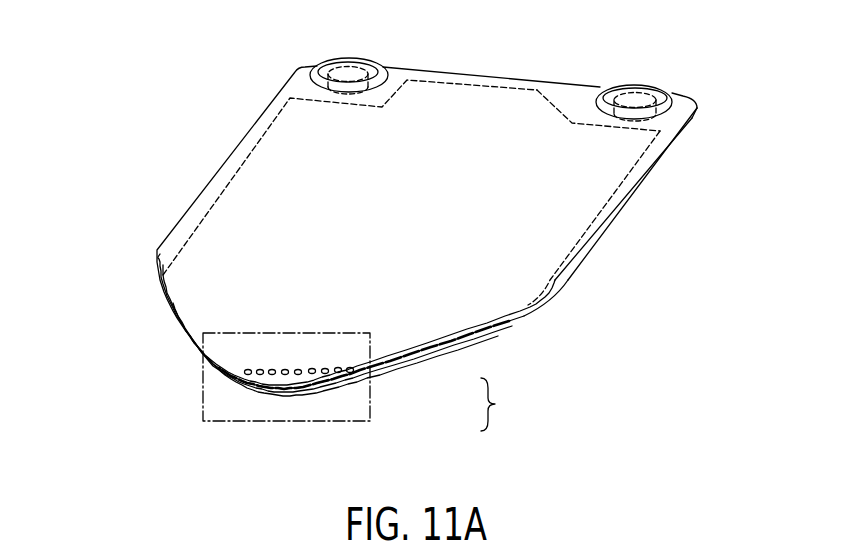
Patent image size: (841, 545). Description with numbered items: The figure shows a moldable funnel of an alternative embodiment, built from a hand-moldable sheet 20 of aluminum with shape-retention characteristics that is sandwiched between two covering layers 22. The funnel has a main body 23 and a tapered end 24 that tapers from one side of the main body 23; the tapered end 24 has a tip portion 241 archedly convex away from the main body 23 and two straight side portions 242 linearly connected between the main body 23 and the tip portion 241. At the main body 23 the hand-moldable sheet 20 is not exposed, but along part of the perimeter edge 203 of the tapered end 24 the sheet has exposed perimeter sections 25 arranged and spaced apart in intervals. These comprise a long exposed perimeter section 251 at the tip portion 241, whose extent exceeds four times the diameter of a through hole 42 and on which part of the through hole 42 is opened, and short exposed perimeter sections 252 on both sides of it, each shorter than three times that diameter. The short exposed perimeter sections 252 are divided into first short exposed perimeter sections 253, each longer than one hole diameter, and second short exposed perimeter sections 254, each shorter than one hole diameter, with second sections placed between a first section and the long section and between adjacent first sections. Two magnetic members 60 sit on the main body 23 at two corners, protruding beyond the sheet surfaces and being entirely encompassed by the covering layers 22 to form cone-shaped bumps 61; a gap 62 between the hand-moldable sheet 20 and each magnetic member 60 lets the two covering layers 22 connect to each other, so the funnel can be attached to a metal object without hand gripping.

The hand-moldable sheet 20 is at (541, 84).
The covering layers 22 is at (613, 219).
The main body 23 is at (593, 175).
The tapered end 24 is at (300, 353).
The exposed perimeter sections 25 is at (180, 350).
The through hole 42 is at (243, 388).
The magnetic member 60 is at (648, 97).
The bump 61 is at (374, 70).
The gap 62 is at (660, 131).
The perimeter edge 203 is at (553, 304).
The tip portion 241 is at (255, 412).
The straight side portions 242 is at (178, 322).
The long exposed perimeter section 251 is at (281, 389).
The short exposed perimeter sections 252 is at (506, 404).
The first short exposed perimeter sections 253 is at (409, 366).
The second short exposed perimeter sections 254 is at (394, 371).